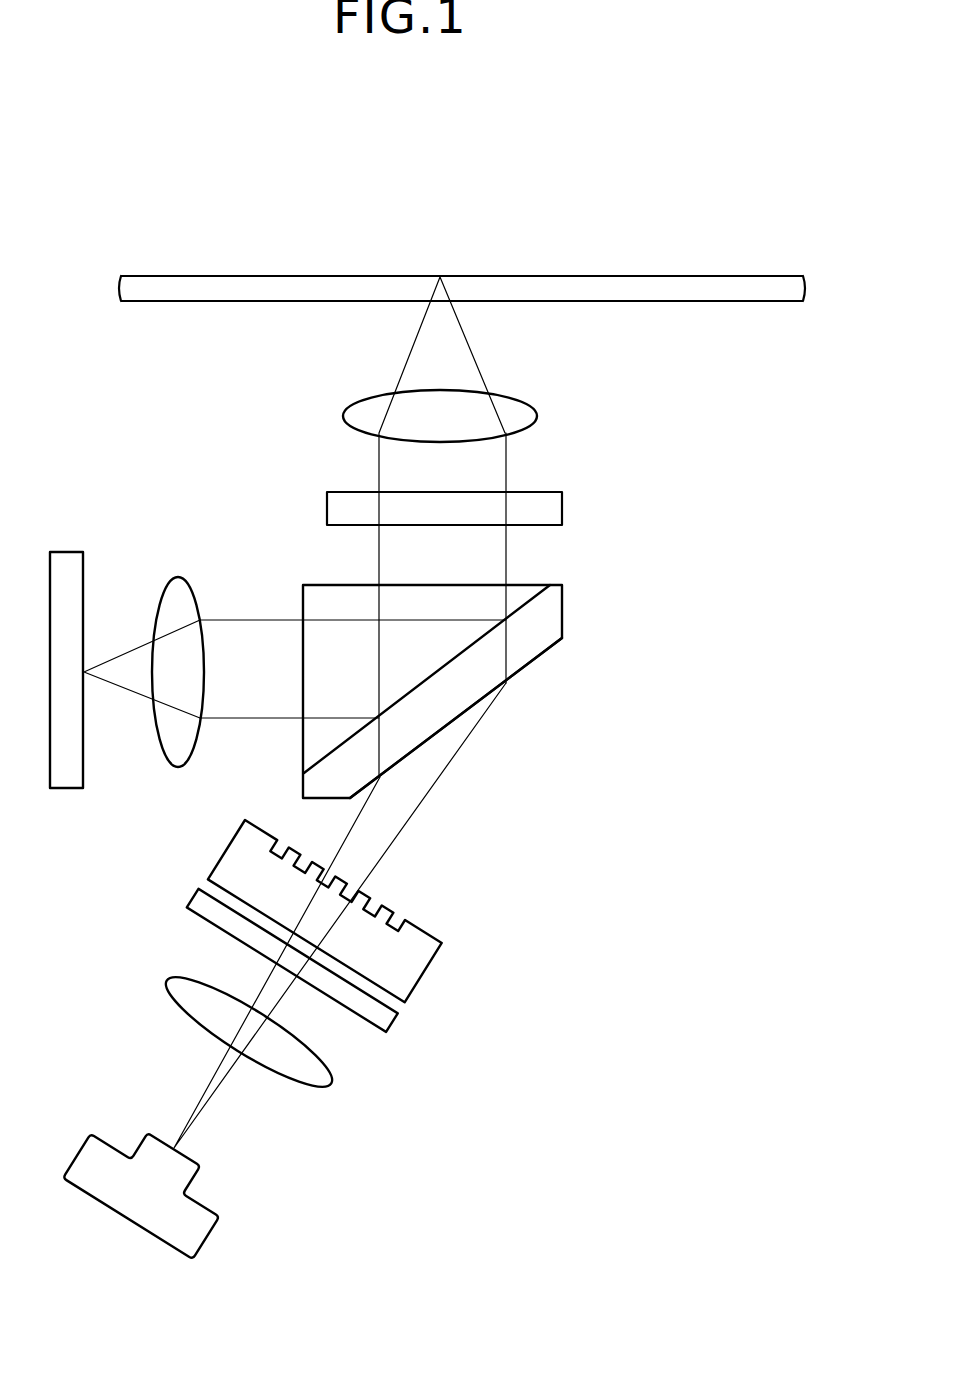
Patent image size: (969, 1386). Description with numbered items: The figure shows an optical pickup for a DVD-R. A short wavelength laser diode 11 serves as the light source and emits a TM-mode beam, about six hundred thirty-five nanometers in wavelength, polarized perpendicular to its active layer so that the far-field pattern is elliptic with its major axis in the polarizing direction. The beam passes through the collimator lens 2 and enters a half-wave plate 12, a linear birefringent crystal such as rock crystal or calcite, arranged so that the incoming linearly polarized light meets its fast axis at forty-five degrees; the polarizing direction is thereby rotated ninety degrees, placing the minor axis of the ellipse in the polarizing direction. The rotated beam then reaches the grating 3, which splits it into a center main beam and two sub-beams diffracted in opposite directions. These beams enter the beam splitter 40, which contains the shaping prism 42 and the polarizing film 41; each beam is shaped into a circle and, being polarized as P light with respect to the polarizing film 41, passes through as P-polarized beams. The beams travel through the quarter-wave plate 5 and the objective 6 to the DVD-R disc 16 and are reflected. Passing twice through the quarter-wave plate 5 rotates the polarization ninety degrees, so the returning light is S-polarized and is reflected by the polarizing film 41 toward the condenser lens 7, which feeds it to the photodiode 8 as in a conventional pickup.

The DVD-R disc 16 is at (653, 286).
The objective 6 is at (521, 404).
The quarter-wave plate 5 is at (562, 505).
The beam splitter 40 is at (488, 665).
The polarizing film 41 is at (530, 603).
The shaping prism 42 is at (534, 655).
The photodiode 8 is at (65, 555).
The condenser lens 7 is at (185, 752).
The grating 3 is at (405, 967).
The half-wave plate 12 is at (383, 1020).
The collimator lens 2 is at (282, 1067).
The laser diode 11 is at (198, 1237).